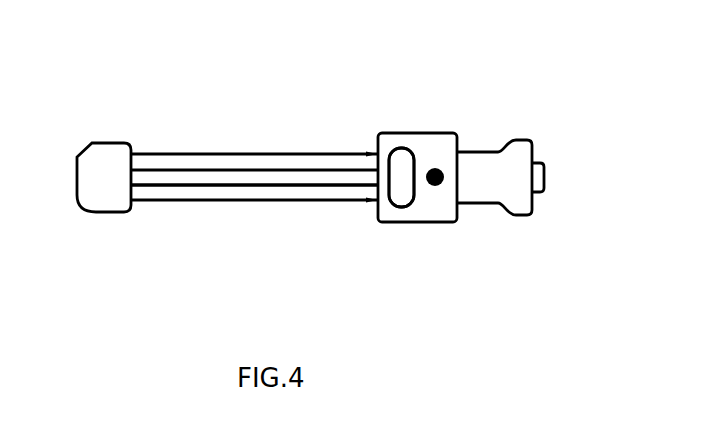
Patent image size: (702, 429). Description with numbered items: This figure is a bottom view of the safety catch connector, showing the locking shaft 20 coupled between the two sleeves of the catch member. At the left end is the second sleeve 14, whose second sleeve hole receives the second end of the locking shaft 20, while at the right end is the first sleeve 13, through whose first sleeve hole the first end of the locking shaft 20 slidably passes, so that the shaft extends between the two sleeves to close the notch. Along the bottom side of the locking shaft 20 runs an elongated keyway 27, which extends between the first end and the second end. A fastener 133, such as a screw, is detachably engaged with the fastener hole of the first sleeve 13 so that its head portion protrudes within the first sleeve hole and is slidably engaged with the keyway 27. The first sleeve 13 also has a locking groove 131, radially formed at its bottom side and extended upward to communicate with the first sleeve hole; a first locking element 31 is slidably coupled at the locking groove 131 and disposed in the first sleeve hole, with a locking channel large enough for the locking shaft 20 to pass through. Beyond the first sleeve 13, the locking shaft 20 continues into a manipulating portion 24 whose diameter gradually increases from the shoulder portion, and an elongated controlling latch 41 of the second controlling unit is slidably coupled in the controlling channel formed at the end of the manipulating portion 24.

The second sleeve 14 is at (92, 150).
The locking shaft 20 is at (188, 157).
The keyway 27 is at (212, 178).
The first sleeve 13 is at (418, 137).
The first locking element 31 is at (405, 202).
The locking groove 131 is at (415, 177).
The fastener 133 is at (435, 177).
The manipulating portion 24 is at (505, 148).
The controlling latch 41 is at (545, 176).